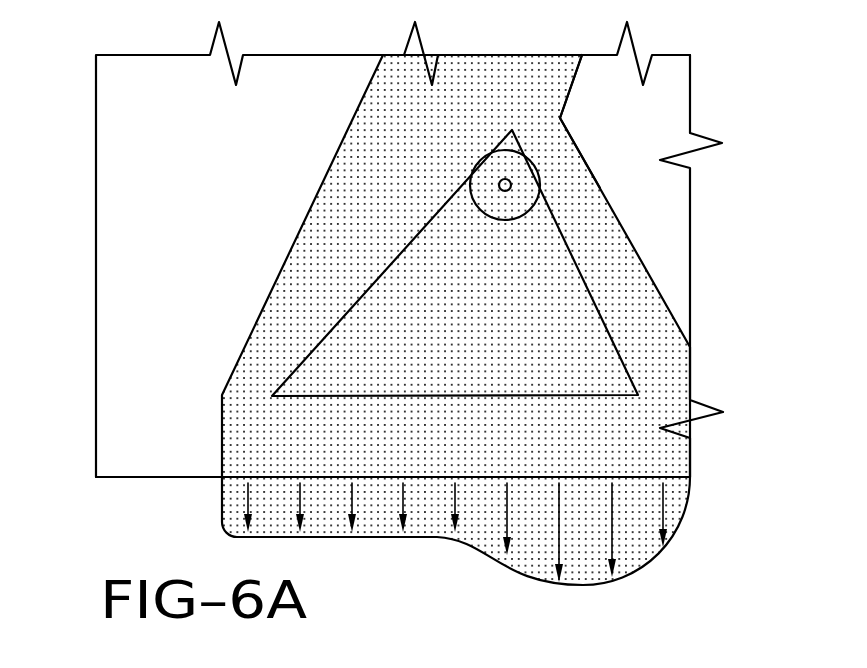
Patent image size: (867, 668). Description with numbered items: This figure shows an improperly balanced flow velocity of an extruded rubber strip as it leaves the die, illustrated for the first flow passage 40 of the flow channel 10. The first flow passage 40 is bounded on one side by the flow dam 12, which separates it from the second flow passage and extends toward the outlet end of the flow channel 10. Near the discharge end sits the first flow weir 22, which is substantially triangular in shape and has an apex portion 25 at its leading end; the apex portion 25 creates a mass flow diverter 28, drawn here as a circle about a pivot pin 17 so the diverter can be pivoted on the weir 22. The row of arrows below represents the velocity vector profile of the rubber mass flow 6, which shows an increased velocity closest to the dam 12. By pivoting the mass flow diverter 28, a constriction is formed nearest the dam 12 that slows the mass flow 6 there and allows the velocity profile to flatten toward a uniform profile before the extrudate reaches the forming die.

The flow channel 10 is at (62, 130).
The flow dam 12 is at (648, 214).
The first flow passage 40 is at (372, 180).
The mass flow 6 is at (290, 448).
The first flow weir 22 is at (352, 343).
The mass flow diverter 28 is at (482, 170).
The pivot pin 17 is at (512, 184).
The apex portion 25 is at (512, 130).